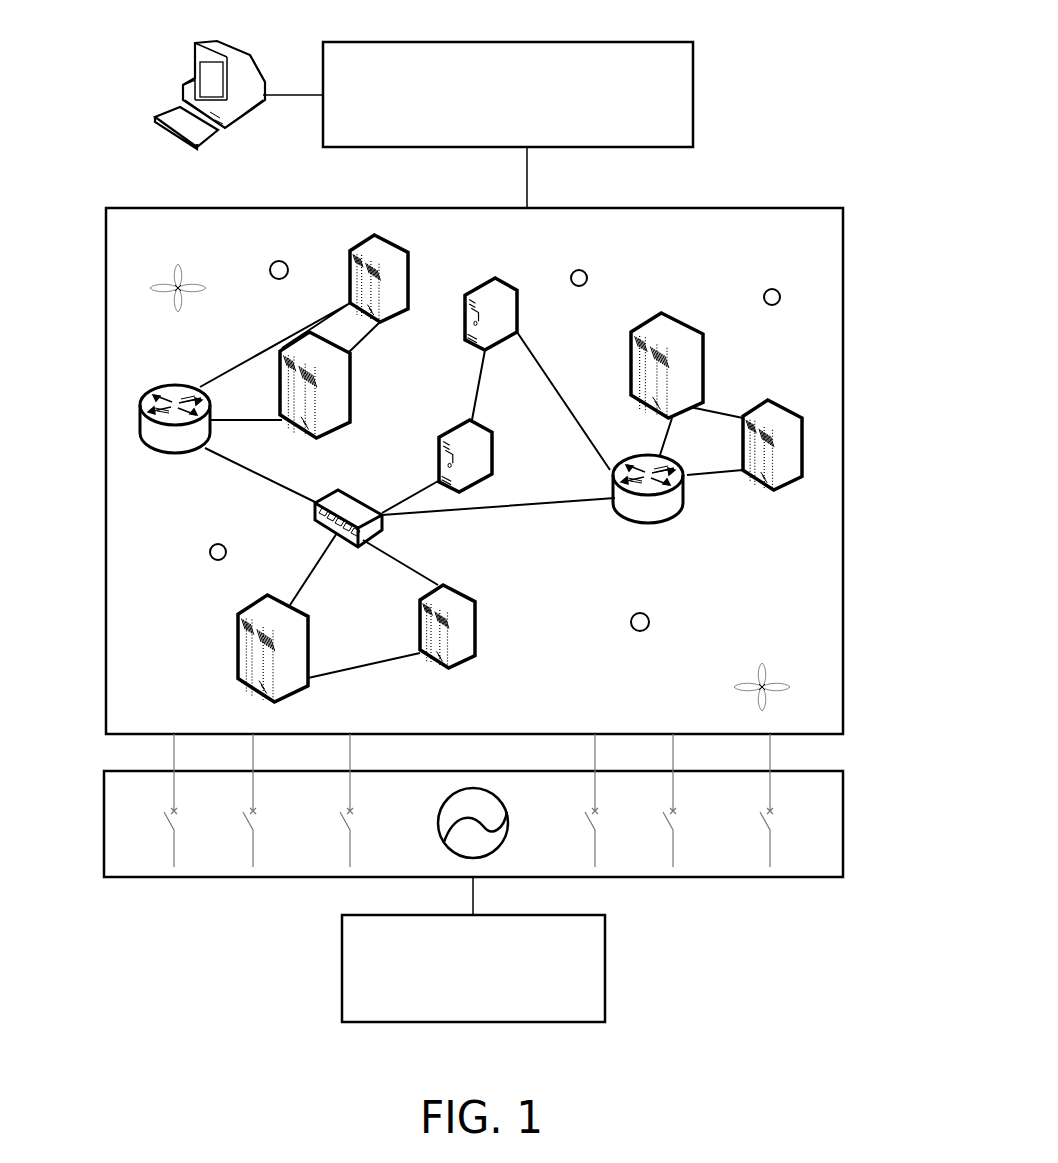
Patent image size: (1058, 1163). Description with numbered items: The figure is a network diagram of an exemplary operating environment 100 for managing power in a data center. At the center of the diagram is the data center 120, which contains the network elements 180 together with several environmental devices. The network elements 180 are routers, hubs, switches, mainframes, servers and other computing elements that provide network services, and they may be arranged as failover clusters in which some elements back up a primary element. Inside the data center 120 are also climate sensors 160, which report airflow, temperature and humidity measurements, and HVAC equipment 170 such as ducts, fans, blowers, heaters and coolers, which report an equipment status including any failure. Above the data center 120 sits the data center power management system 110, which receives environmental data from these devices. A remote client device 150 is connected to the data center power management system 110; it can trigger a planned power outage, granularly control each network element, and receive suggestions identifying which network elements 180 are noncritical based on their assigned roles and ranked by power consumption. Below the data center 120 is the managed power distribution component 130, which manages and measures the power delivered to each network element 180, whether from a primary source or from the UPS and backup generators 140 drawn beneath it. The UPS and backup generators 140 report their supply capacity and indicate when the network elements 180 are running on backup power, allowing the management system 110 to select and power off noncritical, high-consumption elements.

The operating environment 100 is at (808, 27).
The data center power management system 110 is at (694, 107).
The data center 120 is at (790, 205).
The managed power distribution component 130 is at (104, 830).
The UPS and backup generators 140 is at (340, 957).
The remote client device 150 is at (167, 107).
The climate sensors 160 is at (581, 270).
The HVAC equipment 170 is at (178, 263).
The network elements 180 is at (187, 384).